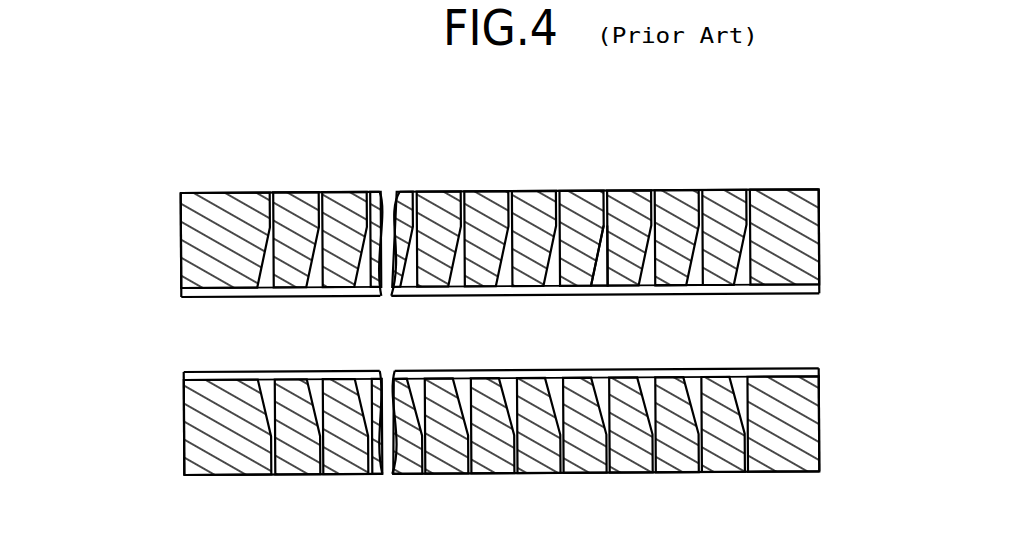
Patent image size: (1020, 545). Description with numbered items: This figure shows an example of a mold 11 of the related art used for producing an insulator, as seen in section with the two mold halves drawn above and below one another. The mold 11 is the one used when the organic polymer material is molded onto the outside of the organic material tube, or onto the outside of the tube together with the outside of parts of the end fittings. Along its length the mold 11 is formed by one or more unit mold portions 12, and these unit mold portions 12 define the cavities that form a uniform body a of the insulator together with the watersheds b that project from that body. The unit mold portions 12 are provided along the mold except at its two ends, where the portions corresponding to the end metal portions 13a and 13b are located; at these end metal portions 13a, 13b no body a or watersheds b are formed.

The mold 11 is at (228, 133).
The unit mold portion 12 is at (334, 192).
The end metal portion 13a is at (820, 243).
The end metal portion 13b is at (181, 249).
The uniform body a is at (668, 287).
The watershed b is at (597, 278).